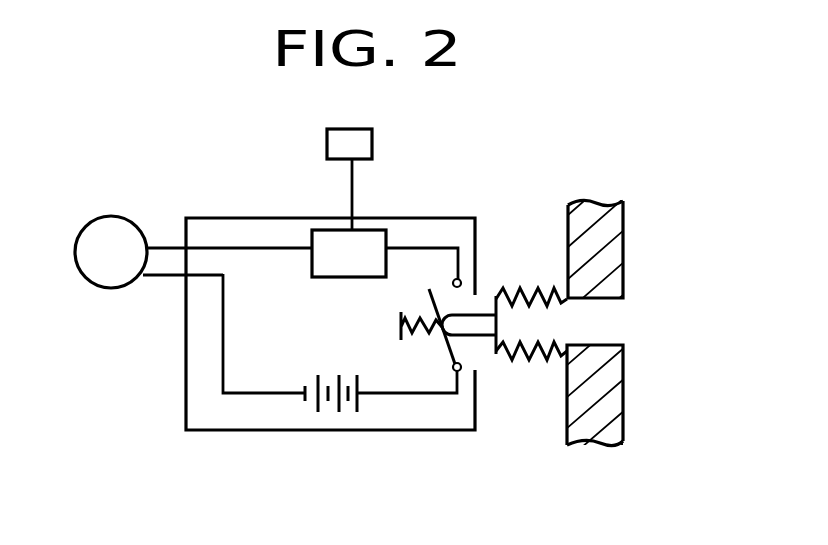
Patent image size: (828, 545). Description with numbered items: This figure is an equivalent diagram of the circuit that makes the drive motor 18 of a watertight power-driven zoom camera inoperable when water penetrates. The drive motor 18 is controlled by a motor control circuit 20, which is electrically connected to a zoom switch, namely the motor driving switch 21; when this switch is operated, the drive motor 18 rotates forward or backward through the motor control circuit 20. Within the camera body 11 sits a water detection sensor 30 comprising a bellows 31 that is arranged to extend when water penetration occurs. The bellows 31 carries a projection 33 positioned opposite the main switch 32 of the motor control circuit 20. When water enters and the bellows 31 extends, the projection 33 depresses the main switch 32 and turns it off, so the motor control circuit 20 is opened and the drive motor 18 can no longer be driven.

The camera body 11 is at (605, 398).
The drive motor 18 is at (113, 290).
The motor control circuit 20 is at (387, 413).
The motor driving switch 21 is at (373, 143).
The water detection sensor 30 is at (632, 290).
The bellows 31 is at (535, 290).
The main switch 32 is at (449, 351).
The projection 33 is at (498, 320).